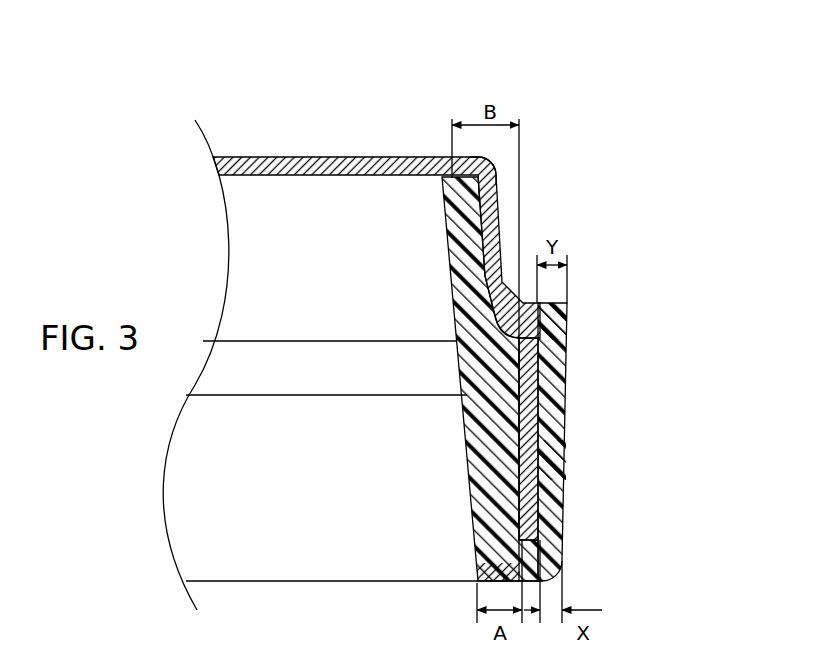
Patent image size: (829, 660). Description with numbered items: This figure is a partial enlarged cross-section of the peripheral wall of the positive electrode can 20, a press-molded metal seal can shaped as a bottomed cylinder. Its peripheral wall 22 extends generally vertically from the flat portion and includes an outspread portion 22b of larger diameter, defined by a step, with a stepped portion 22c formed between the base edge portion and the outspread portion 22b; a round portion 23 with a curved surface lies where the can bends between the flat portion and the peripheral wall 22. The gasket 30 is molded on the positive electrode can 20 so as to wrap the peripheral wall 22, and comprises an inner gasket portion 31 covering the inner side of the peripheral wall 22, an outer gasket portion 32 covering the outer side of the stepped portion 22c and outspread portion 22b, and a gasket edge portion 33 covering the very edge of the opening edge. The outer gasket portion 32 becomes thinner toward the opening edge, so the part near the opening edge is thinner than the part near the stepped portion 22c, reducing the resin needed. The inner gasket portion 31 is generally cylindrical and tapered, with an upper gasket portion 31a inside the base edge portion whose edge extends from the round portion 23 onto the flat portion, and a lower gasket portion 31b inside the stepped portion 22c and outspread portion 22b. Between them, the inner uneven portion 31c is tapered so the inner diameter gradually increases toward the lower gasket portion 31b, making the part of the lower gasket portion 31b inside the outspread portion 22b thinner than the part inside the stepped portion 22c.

The positive electrode can 20 is at (373, 158).
The round portion 23 is at (484, 166).
The gasket 30 is at (517, 379).
The inner gasket portion 31 is at (468, 470).
The upper gasket portion 31a is at (446, 207).
The lower gasket portion 31b is at (487, 494).
The inner uneven portion 31c is at (460, 364).
The outer gasket portion 32 is at (545, 508).
The gasket edge portion 33 is at (500, 577).
The peripheral wall 22 is at (541, 402).
The outspread portion 22b is at (540, 461).
The stepped portion 22c is at (560, 318).